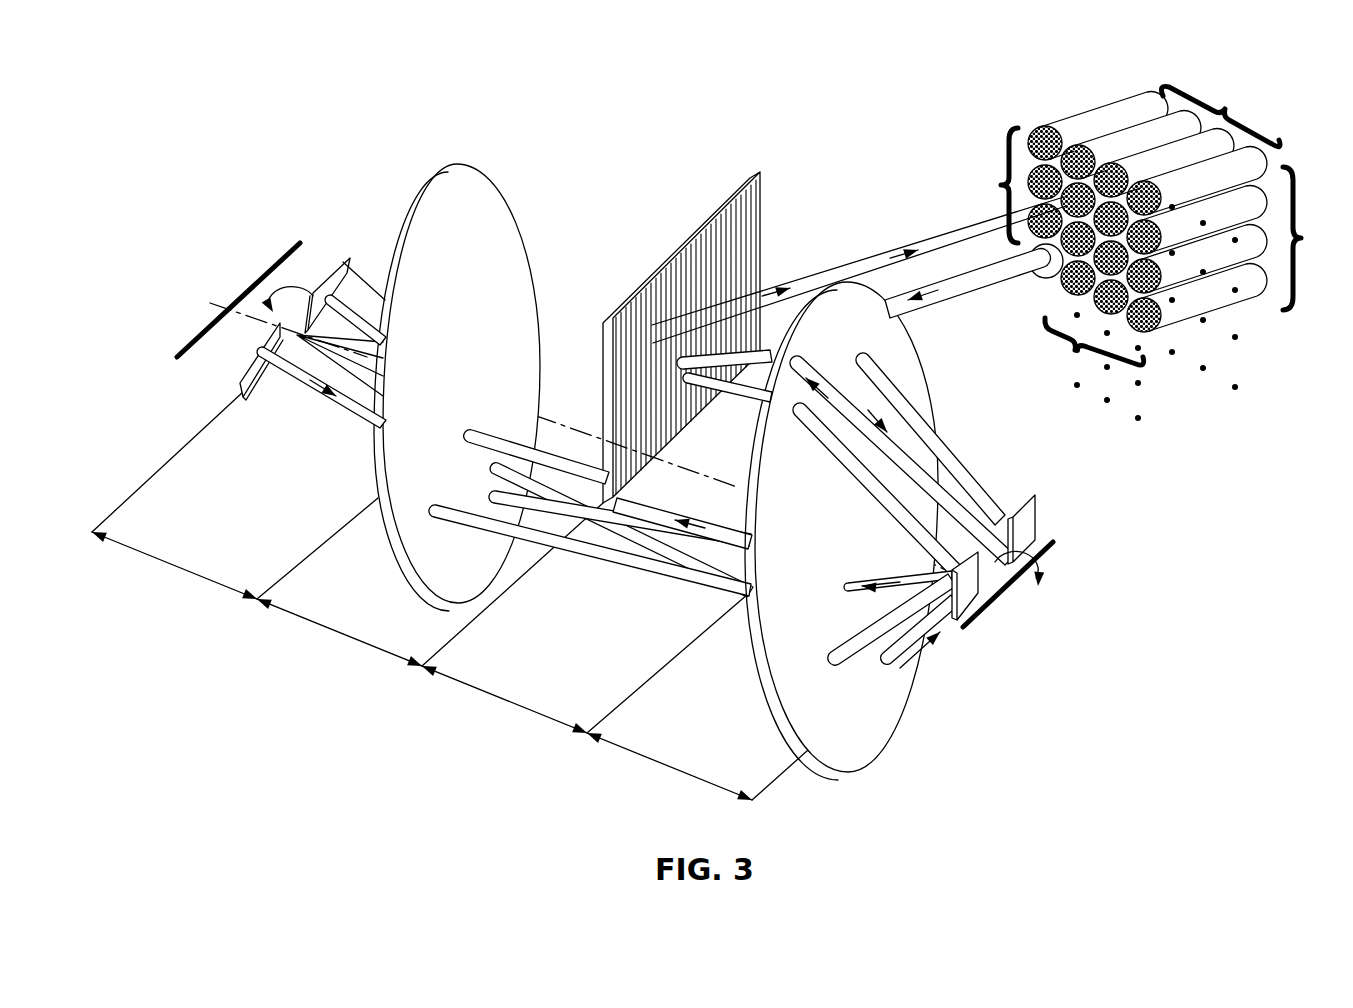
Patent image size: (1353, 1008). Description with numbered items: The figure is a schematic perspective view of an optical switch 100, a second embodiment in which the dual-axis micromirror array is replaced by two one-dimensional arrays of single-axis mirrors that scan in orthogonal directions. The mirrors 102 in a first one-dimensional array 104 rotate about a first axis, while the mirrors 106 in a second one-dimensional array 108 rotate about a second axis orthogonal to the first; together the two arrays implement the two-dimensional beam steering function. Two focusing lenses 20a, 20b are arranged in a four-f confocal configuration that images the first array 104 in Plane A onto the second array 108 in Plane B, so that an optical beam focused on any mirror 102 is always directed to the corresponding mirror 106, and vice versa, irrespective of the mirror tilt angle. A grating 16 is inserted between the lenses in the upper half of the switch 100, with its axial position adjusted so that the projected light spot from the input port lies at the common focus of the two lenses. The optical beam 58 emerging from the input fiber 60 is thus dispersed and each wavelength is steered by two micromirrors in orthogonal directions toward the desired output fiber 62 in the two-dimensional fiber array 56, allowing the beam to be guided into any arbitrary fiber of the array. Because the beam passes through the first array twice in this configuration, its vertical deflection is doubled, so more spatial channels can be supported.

The optical switch 100 is at (250, 126).
The grating 16 is at (633, 292).
The focusing lens 20a is at (920, 386).
The focusing lens 20b is at (503, 196).
The 2D output fiber array 56 is at (1151, 251).
The optical beam 58 is at (930, 308).
The input fiber 60 is at (1030, 286).
The output fibers 62 is at (1078, 147).
The mirrors 102 is at (1037, 505).
The first 1D array 104 is at (1008, 584).
The mirrors 106 is at (340, 262).
The second 1D array 108 is at (245, 300).